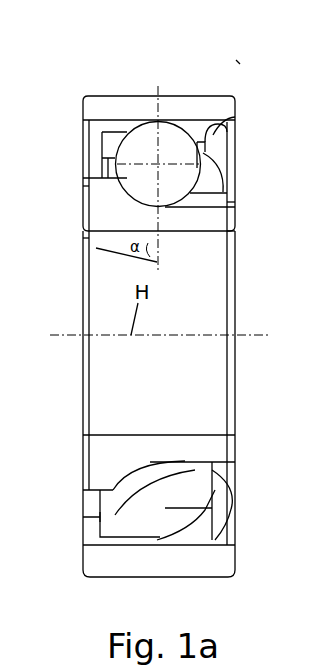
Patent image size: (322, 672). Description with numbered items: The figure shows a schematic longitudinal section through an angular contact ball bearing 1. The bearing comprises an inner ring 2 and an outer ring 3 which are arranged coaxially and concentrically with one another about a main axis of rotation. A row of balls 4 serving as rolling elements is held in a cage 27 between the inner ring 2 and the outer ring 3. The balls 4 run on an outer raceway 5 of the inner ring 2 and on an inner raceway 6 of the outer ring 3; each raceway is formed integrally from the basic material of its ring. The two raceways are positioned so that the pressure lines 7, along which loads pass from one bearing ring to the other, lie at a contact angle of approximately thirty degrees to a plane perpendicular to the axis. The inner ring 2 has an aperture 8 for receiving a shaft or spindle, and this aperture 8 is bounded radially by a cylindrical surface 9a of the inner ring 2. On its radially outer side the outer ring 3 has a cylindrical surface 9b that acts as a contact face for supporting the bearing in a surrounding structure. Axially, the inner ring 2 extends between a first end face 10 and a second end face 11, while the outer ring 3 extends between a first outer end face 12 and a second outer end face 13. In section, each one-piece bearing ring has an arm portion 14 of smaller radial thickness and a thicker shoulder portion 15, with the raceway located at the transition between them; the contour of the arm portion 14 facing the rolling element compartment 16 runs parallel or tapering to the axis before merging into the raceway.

The angular contact ball bearing 1 is at (238, 62).
The inner ring 2 is at (238, 208).
The outer ring 3 is at (238, 98).
The balls 4 is at (158, 164).
The outer raceway 5 is at (86, 189).
The inner raceway 6 is at (175, 142).
The pressure lines 7 is at (83, 245).
The aperture 8 is at (159, 388).
The cylindrical surface of the inner ring 9a is at (186, 234).
The cylindrical surface of the outer ring 9b is at (125, 96).
The first end face 10 is at (83, 205).
The second end face 11 is at (238, 232).
The first outer end face 12 is at (81, 103).
The second outer end face 13 is at (240, 122).
The arm portion 14 is at (190, 435).
The shoulder portion 15 is at (115, 435).
The rolling element compartment 16 is at (166, 500).
The cage 27 is at (100, 520).